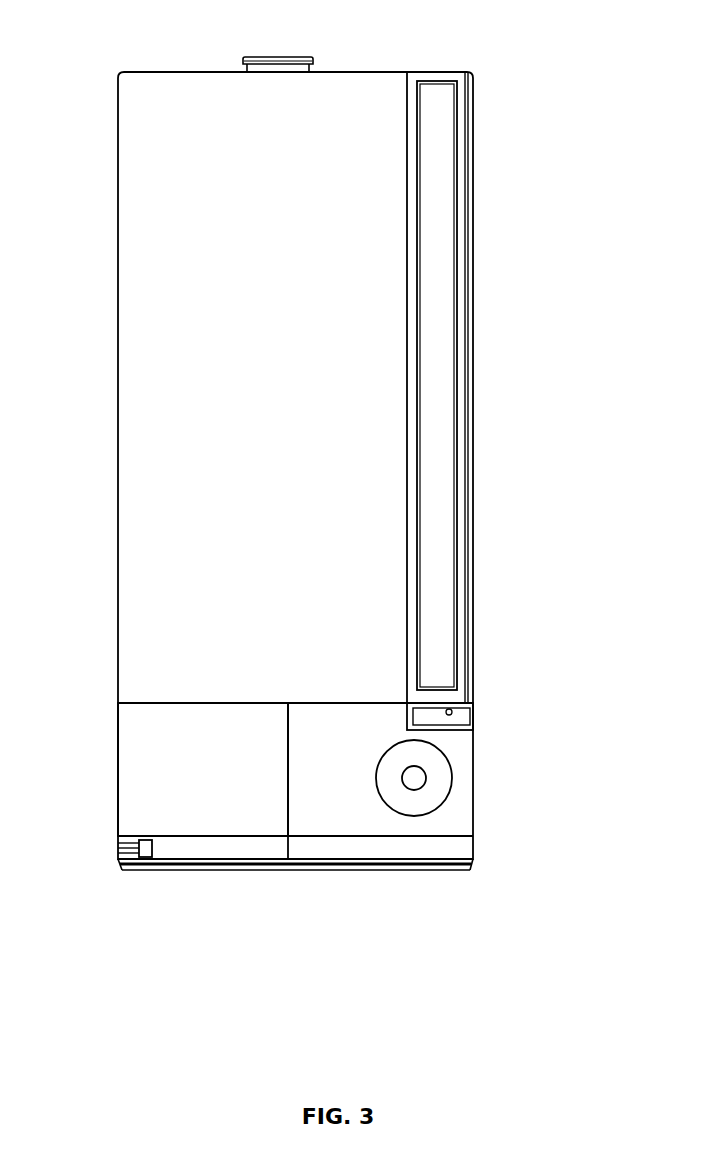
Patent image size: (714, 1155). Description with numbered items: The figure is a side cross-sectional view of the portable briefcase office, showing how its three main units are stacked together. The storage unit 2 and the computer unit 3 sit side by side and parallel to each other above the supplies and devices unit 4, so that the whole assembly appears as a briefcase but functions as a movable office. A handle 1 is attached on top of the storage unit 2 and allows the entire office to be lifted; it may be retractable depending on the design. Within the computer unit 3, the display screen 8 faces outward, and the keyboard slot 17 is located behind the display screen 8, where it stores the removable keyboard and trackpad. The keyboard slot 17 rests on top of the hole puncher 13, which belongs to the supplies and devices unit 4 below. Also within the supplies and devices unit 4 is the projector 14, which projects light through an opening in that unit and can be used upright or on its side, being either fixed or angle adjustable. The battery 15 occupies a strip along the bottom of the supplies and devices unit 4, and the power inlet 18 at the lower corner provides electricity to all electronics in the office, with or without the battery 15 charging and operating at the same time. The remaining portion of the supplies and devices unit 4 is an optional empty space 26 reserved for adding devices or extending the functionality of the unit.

The handle 1 is at (288, 57).
The storage unit 2 is at (187, 223).
The computer unit 3 is at (462, 438).
The supplies and devices unit 4 is at (347, 800).
The display screen 8 is at (468, 105).
The hole puncher 13 is at (462, 719).
The projector 14 is at (434, 778).
The battery 15 is at (455, 845).
The keyboard slot 17 is at (445, 195).
The power inlet 18 is at (120, 847).
The empty space 26 is at (147, 761).